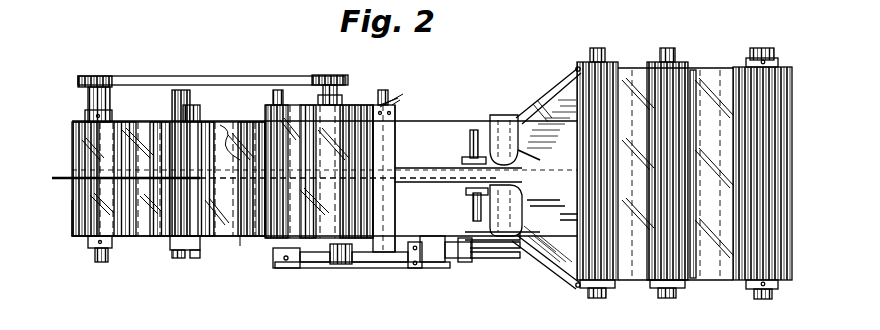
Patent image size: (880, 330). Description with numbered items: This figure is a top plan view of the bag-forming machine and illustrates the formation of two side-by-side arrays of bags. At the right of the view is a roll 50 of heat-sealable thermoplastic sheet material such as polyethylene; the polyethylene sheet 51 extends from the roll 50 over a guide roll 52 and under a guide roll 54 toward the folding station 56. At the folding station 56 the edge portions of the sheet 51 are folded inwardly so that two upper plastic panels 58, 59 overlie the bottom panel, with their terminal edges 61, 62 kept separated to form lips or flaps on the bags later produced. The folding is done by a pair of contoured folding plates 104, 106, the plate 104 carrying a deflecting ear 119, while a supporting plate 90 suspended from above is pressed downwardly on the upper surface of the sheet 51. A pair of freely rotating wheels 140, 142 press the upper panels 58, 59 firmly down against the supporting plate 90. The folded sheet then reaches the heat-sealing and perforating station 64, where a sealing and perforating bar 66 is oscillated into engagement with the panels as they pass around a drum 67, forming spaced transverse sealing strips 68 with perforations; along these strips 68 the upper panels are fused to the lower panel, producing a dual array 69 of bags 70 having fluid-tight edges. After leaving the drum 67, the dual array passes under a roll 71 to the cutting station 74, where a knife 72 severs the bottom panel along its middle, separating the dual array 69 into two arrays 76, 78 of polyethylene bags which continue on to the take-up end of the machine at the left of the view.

The roll 50 is at (792, 80).
The polyethylene sheet 51 is at (724, 74).
The guide roll 52 is at (684, 60).
The guide roll 54 is at (614, 60).
The folding station 56 is at (503, 110).
The upper plastic panel 58 is at (480, 126).
The upper plastic panel 59 is at (460, 248).
The terminal edge 61 is at (428, 158).
The terminal edge 62 is at (414, 182).
The heat-sealing and perforating station 64 is at (379, 81).
The sealing and perforating bar 66 is at (397, 140).
The drum 67 is at (320, 106).
The sealing strips 68 is at (240, 122).
The dual array 69 is at (262, 232).
The bags 70 is at (210, 242).
The roll 71 is at (272, 256).
The knife 72 is at (191, 174).
The cutting station 74 is at (200, 74).
The array of polyethylene bags 76 is at (70, 140).
The array of polyethylene bags 78 is at (70, 222).
The supporting plate 90 is at (563, 188).
The folding plate 104 is at (524, 146).
The folding plate 106 is at (540, 232).
The deflecting ear 119 is at (552, 100).
The wheel 140 is at (436, 128).
The wheel 142 is at (464, 212).